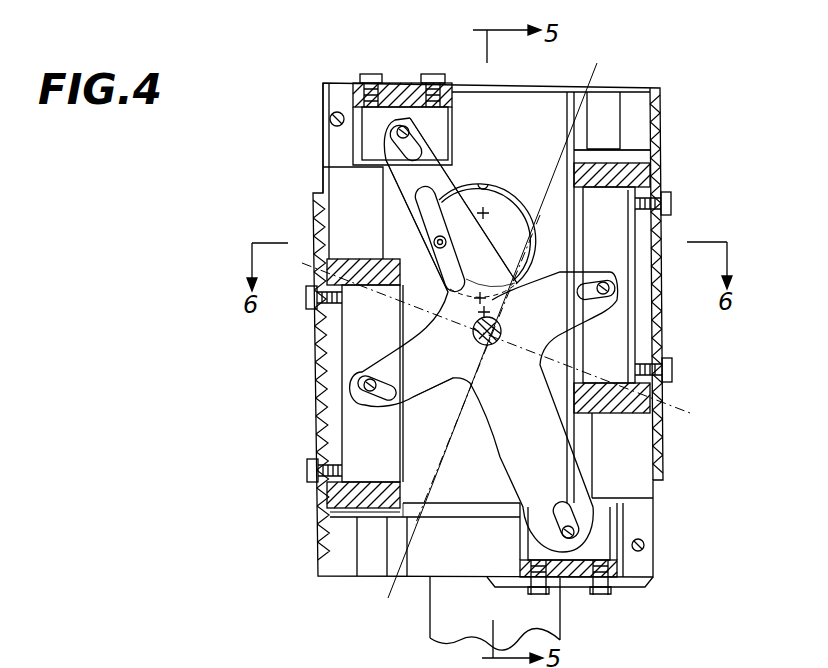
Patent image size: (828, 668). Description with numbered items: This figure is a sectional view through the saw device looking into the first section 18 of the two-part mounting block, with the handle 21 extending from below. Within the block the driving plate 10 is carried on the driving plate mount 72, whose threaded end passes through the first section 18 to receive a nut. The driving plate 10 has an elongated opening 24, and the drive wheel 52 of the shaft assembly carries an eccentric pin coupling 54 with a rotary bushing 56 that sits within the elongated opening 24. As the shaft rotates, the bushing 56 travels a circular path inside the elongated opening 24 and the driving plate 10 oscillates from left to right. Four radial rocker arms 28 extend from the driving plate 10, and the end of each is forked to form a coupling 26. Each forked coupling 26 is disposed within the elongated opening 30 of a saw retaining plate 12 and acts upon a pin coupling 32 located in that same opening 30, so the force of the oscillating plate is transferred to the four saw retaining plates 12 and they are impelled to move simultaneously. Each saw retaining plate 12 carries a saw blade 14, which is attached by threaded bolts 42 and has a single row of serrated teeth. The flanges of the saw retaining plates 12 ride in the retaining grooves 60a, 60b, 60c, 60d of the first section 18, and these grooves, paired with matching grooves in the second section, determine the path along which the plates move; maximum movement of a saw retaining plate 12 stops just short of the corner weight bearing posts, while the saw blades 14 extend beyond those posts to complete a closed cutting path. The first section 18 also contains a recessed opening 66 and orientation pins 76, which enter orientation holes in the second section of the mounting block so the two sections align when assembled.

The driving plate 10 is at (527, 402).
The saw retaining plate 12 is at (357, 72).
The saw blade 14 is at (325, 93).
The first section 18 is at (477, 476).
The handle 21 is at (440, 620).
The elongated opening 24 is at (455, 277).
The forked coupling 26 is at (392, 158).
The radial rocker arm 28 is at (457, 372).
The elongated opening 30 is at (440, 117).
The pin coupling 32 is at (397, 133).
The threaded bolt 42 is at (423, 68).
The drive wheel 52 is at (517, 210).
The pin coupling 54 is at (430, 230).
The bushing 56 is at (434, 242).
The retaining groove 60a is at (573, 90).
The retaining groove 60b is at (397, 550).
The retaining groove 60c is at (630, 157).
The retaining groove 60d is at (335, 512).
The recessed opening 66 is at (482, 184).
The driving plate mount 72 is at (500, 329).
The orientation pin 76 is at (329, 120).